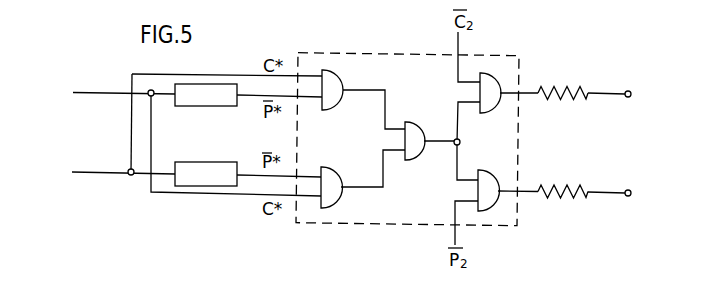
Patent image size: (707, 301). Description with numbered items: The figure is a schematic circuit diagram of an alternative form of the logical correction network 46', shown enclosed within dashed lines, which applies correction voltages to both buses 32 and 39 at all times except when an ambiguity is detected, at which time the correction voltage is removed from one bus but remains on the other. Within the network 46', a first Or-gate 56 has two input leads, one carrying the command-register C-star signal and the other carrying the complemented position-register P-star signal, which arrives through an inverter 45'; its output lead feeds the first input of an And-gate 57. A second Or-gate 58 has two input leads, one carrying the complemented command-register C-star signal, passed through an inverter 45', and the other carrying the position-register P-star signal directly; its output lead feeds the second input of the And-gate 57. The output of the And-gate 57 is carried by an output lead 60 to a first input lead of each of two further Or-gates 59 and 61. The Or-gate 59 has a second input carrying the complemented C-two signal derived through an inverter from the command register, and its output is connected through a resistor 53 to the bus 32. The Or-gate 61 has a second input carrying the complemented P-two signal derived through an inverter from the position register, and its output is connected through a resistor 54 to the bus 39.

The inverter 45' is at (200, 153).
The logical correction network 46' is at (407, 121).
The first Or-gate 56 is at (336, 73).
The second Or-gate 58 is at (329, 168).
The And-gate 57 is at (416, 160).
The output lead 60 is at (456, 134).
The Or-gate 59 is at (490, 113).
The Or-gate 61 is at (490, 173).
The resistor 53 is at (558, 86).
The resistor 54 is at (563, 184).
The bus 32 is at (625, 90).
The bus 39 is at (625, 190).